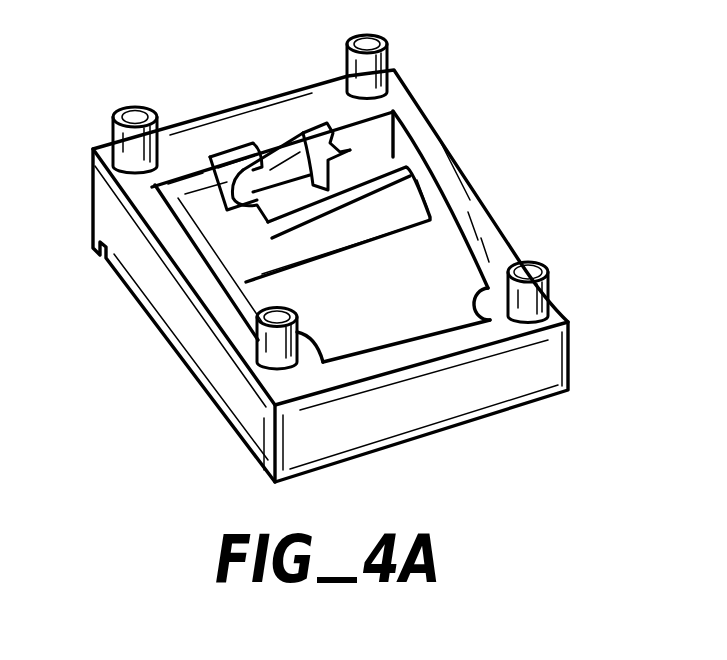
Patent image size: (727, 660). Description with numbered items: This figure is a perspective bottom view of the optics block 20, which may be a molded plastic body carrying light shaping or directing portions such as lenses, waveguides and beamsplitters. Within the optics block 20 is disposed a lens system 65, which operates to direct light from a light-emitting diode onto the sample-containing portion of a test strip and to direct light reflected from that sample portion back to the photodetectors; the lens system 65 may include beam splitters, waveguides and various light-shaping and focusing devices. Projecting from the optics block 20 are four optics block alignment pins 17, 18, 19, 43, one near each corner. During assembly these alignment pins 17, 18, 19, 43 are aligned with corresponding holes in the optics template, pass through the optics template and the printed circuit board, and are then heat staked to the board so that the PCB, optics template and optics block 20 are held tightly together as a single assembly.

The optics block alignment pin 17 is at (137, 150).
The optics block alignment pin 18 is at (527, 297).
The optics block alignment pin 19 is at (283, 346).
The optics block alignment pin 43 is at (353, 82).
The lens system 65 is at (293, 178).
The optics block 20 is at (429, 436).